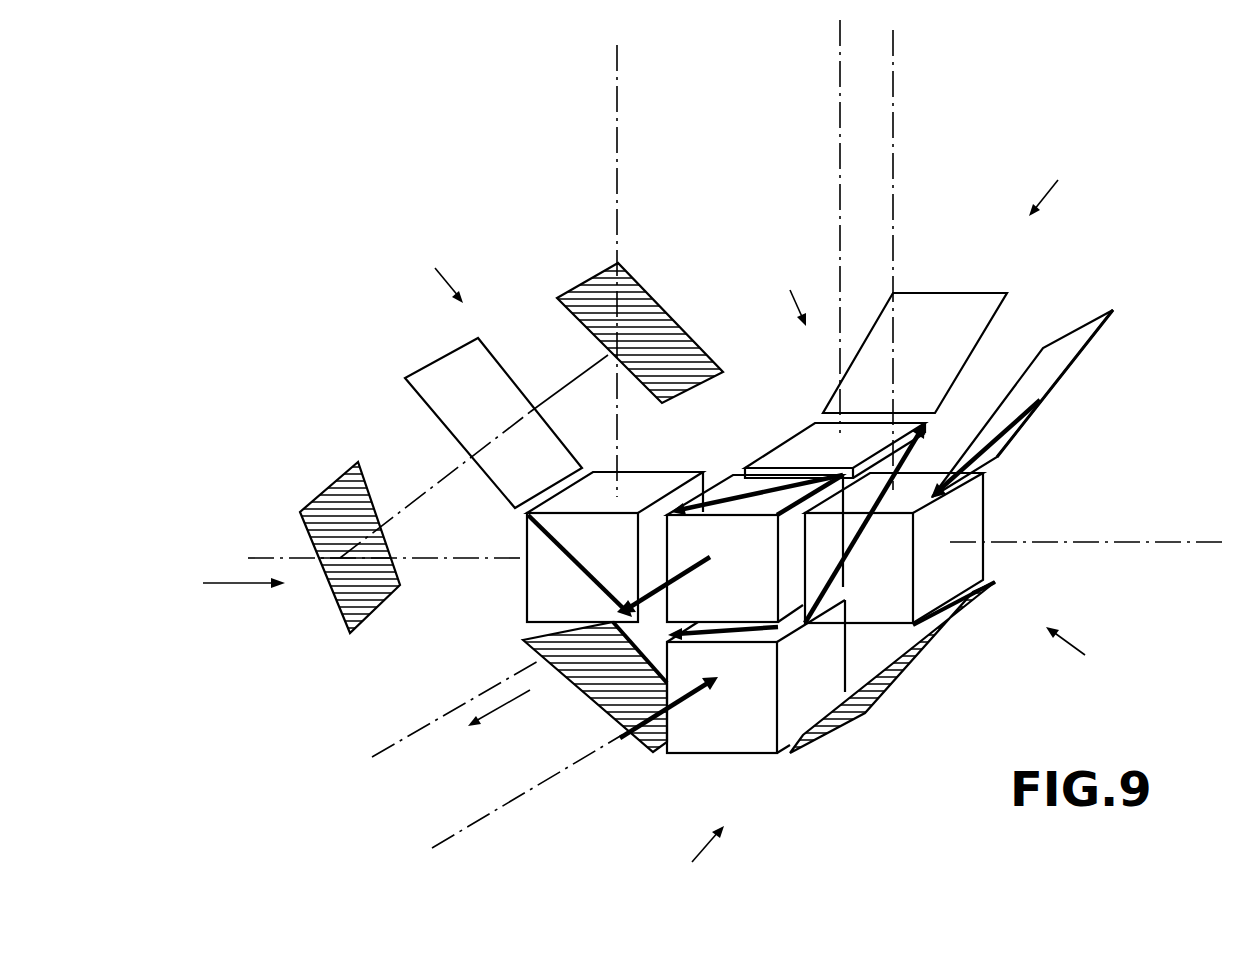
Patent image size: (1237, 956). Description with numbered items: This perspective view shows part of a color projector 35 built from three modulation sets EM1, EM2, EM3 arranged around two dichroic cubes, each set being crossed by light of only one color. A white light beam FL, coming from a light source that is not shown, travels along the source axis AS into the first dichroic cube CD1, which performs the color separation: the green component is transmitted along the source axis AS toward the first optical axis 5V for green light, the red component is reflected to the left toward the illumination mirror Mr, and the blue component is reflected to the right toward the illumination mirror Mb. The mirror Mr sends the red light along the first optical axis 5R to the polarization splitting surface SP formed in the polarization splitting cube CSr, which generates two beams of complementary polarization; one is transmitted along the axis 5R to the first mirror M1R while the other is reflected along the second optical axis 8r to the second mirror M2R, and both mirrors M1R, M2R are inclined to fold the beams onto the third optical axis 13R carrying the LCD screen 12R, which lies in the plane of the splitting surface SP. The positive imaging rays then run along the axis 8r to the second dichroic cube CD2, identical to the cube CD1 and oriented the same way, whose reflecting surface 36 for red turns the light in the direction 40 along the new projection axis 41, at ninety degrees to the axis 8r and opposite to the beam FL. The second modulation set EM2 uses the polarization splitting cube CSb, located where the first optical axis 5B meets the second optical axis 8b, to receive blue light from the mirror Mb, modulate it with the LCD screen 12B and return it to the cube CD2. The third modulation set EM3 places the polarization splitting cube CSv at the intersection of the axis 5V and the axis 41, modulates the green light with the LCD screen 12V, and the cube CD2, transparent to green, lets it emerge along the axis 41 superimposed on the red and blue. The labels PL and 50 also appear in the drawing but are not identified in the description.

The first optical axis for red light 5R is at (617, 110).
The first optical axis for green light 5V is at (840, 42).
The first optical axis for blue light 5B is at (894, 110).
The second optical axis for red light 8r is at (462, 560).
The second optical axis for blue light 8b is at (1160, 543).
The LCD screen for red light 12R is at (436, 363).
The LCD screen for green light 12V is at (945, 294).
The LCD screen for blue light 12B is at (1092, 312).
The third optical axis for red light 13R is at (404, 508).
The first mirror for red light M1R is at (352, 635).
The second mirror for red light M2R is at (649, 294).
The first modulation set EM1 is at (429, 271).
The second modulation set EM2 is at (1097, 652).
The third modulation set EM3 is at (927, 238).
The polarization splitting cube for red light CSr is at (522, 597).
The polarization splitting cube for green light CSv is at (786, 429).
The polarization splitting cube for blue light CSb is at (983, 523).
The first dichroic cube CD1 is at (733, 753).
The second dichroic cube CD2 is at (716, 488).
The polarization splitting surface SP is at (522, 544).
The polarized light beam PL is at (693, 570).
The reflecting surface for red light 36 is at (732, 488).
The color projector 35 is at (692, 852).
The illumination mirror for red light Mr is at (587, 693).
The illumination mirror for blue light Mb is at (912, 667).
The white light beam FL is at (630, 747).
The source axis AS is at (506, 804).
The projection direction 40 is at (510, 700).
The new projection axis 41 is at (386, 747).
The incident light beam 50 is at (219, 583).